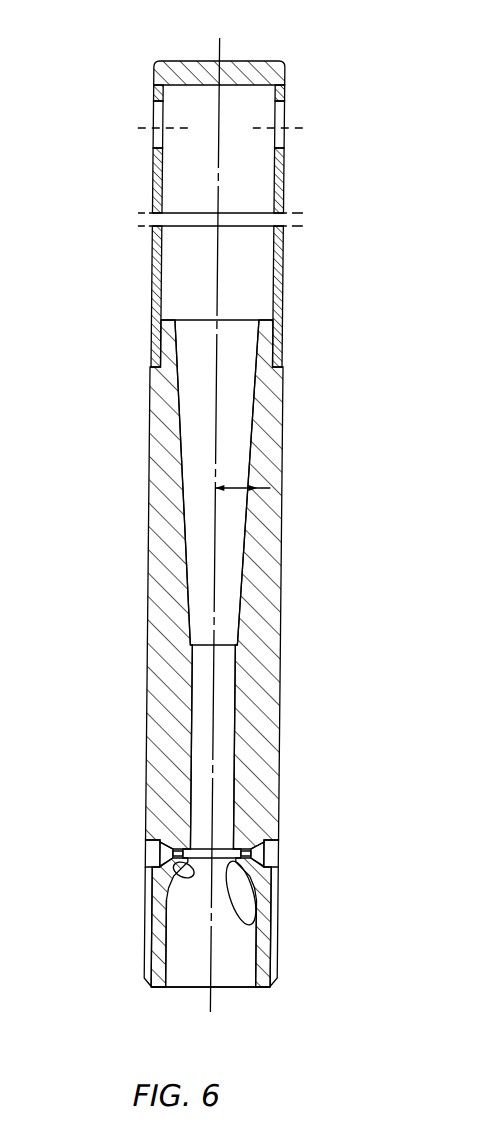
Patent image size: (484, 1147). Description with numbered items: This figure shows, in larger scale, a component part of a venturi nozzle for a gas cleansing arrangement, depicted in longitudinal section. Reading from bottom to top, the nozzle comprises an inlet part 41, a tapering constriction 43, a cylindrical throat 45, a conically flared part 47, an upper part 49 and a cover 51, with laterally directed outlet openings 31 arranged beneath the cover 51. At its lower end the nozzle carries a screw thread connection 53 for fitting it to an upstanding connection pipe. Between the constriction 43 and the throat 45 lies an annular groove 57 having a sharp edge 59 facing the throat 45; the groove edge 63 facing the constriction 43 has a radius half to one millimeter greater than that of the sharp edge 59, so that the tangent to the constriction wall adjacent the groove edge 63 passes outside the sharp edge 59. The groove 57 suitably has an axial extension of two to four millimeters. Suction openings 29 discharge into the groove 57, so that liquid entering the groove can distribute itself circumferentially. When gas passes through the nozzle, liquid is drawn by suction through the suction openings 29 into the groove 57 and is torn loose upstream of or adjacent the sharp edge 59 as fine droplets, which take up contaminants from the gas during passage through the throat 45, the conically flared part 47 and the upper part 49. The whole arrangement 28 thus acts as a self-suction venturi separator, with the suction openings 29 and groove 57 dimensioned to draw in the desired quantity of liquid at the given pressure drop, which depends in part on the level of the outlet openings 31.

The cover 51 is at (251, 62).
The outlet openings 31 is at (156, 113).
The upper part 49 is at (260, 192).
The conically flared part 47 is at (241, 425).
The housing body 28 is at (145, 583).
The cylindrical throat 45 is at (229, 678).
The sharp edge 59 is at (213, 843).
The suction openings 29 is at (160, 848).
The annular groove 57 is at (161, 873).
The tapering constriction 43 is at (250, 886).
The screw thread connection 53 is at (154, 910).
The groove edge 63 is at (251, 927).
The inlet part 41 is at (188, 954).